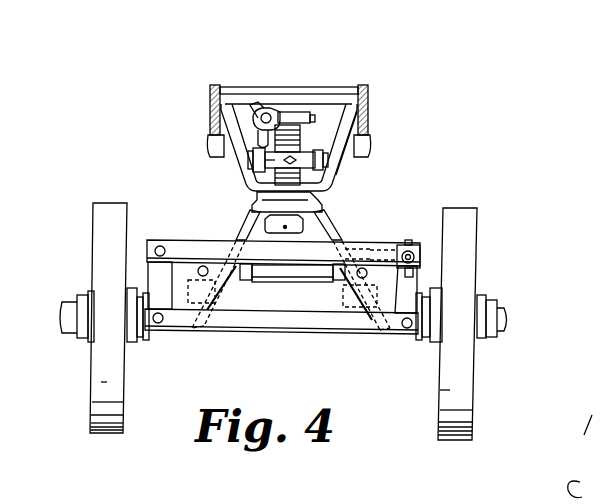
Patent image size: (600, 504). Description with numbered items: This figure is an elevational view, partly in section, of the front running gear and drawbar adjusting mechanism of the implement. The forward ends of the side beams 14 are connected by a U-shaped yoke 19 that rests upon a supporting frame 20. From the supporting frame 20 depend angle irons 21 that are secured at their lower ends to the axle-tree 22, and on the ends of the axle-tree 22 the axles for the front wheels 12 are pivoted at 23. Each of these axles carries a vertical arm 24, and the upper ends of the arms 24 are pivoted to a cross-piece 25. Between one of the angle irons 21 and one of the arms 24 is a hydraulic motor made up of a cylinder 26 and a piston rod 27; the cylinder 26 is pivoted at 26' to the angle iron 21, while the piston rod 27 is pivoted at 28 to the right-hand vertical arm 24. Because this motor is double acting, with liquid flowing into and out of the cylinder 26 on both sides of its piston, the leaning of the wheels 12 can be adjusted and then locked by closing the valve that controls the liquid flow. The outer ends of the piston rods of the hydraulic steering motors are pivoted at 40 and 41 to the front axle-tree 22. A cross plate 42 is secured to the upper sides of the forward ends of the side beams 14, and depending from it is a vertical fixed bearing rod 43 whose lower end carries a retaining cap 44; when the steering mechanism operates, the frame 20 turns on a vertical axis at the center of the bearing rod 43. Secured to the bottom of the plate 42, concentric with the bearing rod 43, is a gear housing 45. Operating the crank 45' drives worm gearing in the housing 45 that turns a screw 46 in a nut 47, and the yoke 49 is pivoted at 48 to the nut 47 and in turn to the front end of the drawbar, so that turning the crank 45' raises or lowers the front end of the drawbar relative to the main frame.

The front wheel 12 is at (103, 218).
The side beam 14 is at (215, 118).
The U-shaped yoke 19 is at (337, 173).
The supporting frame 20 is at (317, 202).
The angle iron 21 is at (205, 263).
The axle-tree 22 is at (347, 325).
The axle pivot 23 is at (158, 323).
The vertical arm 24 is at (162, 273).
The cross-piece 25 is at (347, 243).
The cylinder 26 is at (282, 313).
The cylinder pivot 26' is at (272, 237).
The piston rod 27 is at (388, 243).
The piston rod pivot 28 is at (413, 245).
The piston rod pivot 40 is at (202, 268).
The piston rod pivot 41 is at (371, 266).
The cross plate 42 is at (335, 88).
The bearing rod 43 is at (287, 229).
The retaining cap 44 is at (273, 224).
The gear housing 45 is at (284, 84).
The crank 45' is at (254, 70).
The screw 46 is at (302, 137).
The nut 47 is at (272, 165).
The yoke pivot 48 is at (256, 157).
The yoke 49 is at (262, 152).